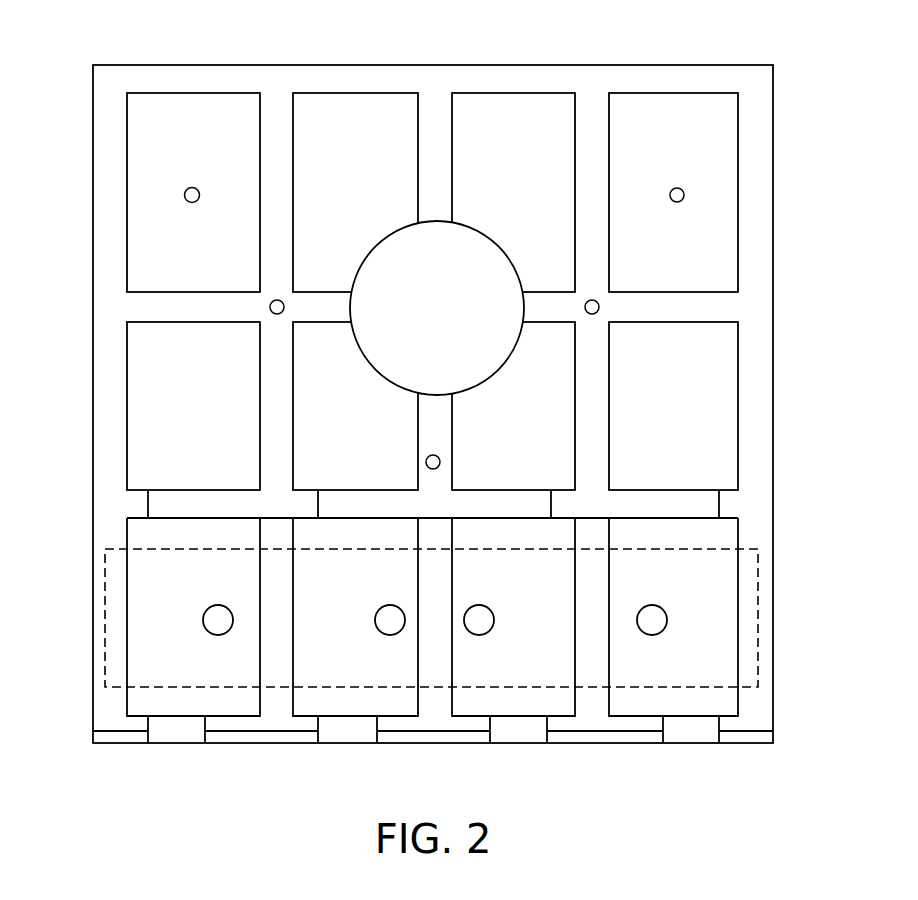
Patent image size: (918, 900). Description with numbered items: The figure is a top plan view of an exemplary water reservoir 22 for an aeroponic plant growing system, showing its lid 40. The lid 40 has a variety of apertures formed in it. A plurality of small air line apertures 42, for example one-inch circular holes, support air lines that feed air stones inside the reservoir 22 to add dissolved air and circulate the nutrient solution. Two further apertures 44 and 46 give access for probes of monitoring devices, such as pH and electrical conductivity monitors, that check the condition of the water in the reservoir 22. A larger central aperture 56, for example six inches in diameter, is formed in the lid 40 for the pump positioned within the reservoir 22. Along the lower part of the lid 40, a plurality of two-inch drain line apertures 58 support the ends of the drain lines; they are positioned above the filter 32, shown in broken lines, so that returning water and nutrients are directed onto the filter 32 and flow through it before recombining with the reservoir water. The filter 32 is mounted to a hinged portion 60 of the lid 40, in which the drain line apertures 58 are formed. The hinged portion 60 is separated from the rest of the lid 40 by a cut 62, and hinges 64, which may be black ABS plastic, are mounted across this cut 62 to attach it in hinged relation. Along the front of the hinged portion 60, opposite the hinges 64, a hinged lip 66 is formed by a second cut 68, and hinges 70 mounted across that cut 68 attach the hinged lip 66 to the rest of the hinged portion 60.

The water reservoir 22 is at (93, 400).
The filter 32 is at (758, 663).
The lid 40 is at (222, 78).
The air line apertures 42 is at (270, 307).
The probe aperture 44 is at (685, 196).
The probe aperture 46 is at (184, 196).
The pump aperture 56 is at (490, 240).
The drain line apertures 58 is at (225, 634).
The hinged portion 60 is at (105, 623).
The cut 62 is at (758, 507).
The hinges 64 is at (160, 512).
The hinged lip 66 is at (117, 744).
The cut 68 is at (748, 732).
The hinges 70 is at (178, 744).